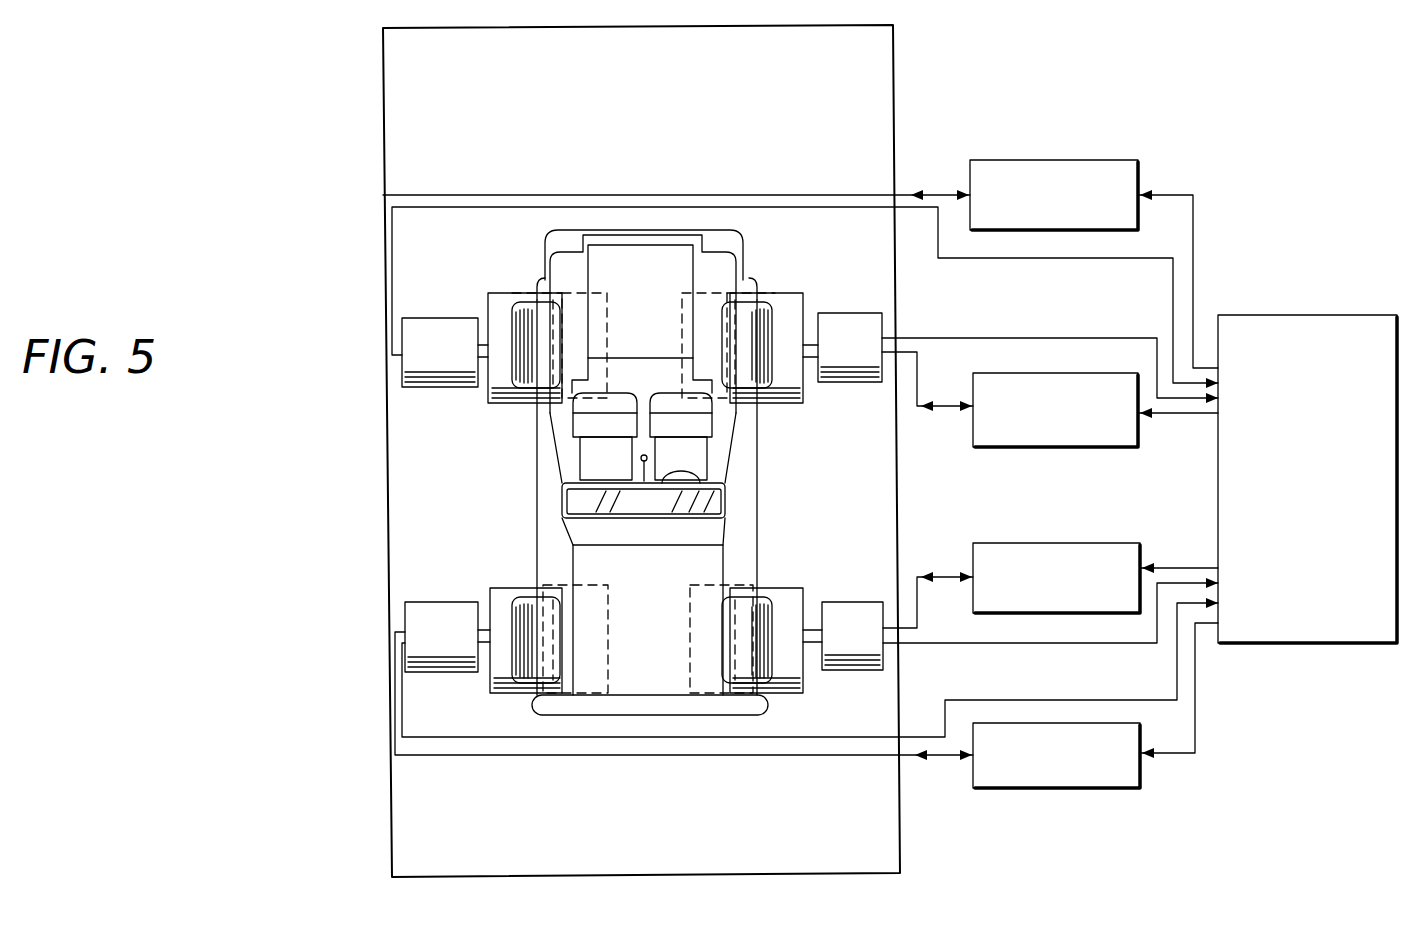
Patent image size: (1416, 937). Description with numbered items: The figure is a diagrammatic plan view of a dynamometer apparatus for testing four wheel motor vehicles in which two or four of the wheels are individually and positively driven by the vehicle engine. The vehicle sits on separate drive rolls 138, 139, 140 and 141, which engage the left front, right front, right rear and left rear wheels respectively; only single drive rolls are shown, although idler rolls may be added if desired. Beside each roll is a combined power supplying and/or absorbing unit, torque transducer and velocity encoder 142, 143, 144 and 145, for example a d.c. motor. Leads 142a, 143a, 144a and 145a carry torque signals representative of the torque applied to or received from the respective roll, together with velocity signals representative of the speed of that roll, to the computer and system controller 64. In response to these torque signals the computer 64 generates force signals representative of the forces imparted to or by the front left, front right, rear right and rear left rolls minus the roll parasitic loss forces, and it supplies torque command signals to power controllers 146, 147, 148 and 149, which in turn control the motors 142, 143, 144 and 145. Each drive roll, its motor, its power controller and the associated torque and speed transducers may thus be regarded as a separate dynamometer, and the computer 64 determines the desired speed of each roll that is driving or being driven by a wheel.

The computer and system controller 64 is at (1278, 314).
The drive roll 138 is at (791, 588).
The drive roll 139 is at (508, 588).
The drive roll 140 is at (507, 292).
The drive roll 141 is at (782, 291).
The combined power supplying and/or absorbing unit, torque transducer and velocity e 142 is at (848, 602).
The lead 142a is at (1010, 642).
The combined power supplying and/or absorbing unit, torque transducer and velocity e 143 is at (449, 672).
The lead 143a is at (855, 737).
The combined power supplying and/or absorbing unit, torque transducer and velocity e 144 is at (437, 388).
The lead 144a is at (419, 212).
The combined power supplying and/or absorbing unit, torque transducer and velocity e 145 is at (843, 313).
The lead 145a is at (966, 338).
The power controller 146 is at (1060, 543).
The power controller 147 is at (1054, 788).
The power controller 148 is at (1039, 160).
The power controller 149 is at (1070, 447).